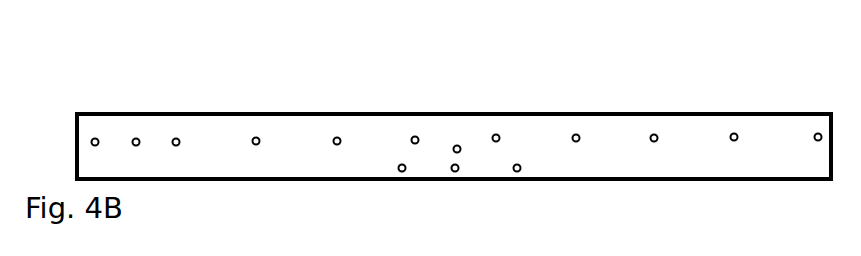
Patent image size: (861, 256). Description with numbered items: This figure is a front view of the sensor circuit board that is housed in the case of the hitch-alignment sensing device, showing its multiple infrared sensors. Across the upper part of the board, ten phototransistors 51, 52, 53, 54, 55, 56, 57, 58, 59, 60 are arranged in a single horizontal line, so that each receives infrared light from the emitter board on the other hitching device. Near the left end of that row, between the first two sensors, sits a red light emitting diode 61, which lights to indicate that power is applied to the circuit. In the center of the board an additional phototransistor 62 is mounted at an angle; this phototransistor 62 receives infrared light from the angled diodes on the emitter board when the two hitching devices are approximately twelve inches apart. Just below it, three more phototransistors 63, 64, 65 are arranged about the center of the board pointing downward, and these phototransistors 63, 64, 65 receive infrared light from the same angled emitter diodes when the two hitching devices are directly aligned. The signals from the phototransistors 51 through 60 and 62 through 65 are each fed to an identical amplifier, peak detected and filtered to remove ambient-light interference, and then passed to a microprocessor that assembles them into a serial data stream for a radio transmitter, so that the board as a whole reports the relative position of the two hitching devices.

The phototransistor 51 is at (97, 139).
The phototransistor 52 is at (178, 139).
The phototransistor 53 is at (257, 138).
The phototransistor 54 is at (337, 138).
The phototransistor 55 is at (416, 137).
The phototransistor 56 is at (496, 135).
The phototransistor 57 is at (575, 135).
The phototransistor 58 is at (652, 135).
The phototransistor 59 is at (732, 134).
The phototransistor 60 is at (815, 135).
The red light emitting diode 61 is at (138, 139).
The phototransistor 62 is at (455, 152).
The phototransistor 63 is at (399, 170).
The phototransistor 64 is at (456, 171).
The phototransistor 65 is at (518, 171).